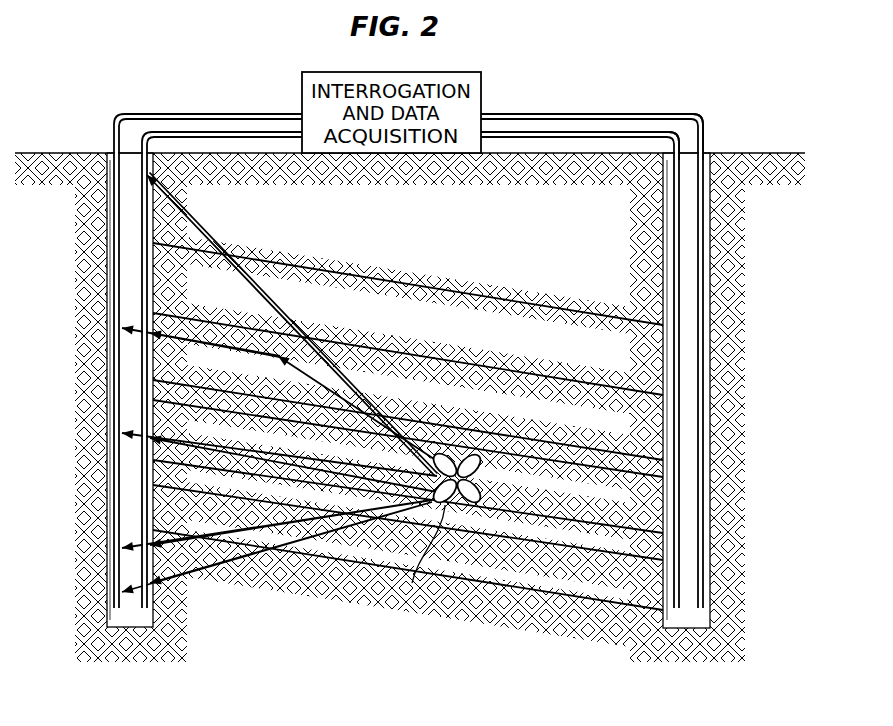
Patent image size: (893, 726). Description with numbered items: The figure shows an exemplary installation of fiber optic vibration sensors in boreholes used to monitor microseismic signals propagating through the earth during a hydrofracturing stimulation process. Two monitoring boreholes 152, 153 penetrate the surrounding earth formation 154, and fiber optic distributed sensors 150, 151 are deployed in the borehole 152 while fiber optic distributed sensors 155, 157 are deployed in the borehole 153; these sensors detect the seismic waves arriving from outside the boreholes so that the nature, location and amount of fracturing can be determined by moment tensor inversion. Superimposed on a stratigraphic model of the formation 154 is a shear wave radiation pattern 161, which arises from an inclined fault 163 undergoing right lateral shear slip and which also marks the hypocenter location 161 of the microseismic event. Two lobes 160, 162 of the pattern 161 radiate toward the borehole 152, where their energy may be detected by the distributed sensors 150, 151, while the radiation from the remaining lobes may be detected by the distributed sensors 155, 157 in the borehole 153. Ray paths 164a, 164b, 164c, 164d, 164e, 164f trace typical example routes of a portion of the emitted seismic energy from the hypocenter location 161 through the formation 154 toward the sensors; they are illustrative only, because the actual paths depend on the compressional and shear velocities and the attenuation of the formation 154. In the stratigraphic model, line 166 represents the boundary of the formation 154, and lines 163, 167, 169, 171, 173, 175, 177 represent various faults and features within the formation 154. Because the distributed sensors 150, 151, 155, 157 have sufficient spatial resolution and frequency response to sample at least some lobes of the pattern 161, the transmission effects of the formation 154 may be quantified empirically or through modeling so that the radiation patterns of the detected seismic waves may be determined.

The fiber optic distributed sensor 150 is at (193, 131).
The fiber optic distributed sensor 151 is at (213, 113).
The borehole 152 is at (95, 262).
The borehole 153 is at (723, 247).
The earth formation 154 is at (640, 300).
The fiber optic distributed sensor 155 is at (583, 131).
The fiber optic distributed sensor 157 is at (607, 113).
The lobe 160 is at (444, 452).
The shear wave radiation pattern 161 is at (483, 487).
The lobe 162 is at (420, 565).
The inclined fault 163 is at (567, 560).
The ray path 164a is at (272, 302).
The ray path 164b is at (342, 398).
The ray path 164c is at (196, 338).
The ray path 164d is at (325, 465).
The ray path 164e is at (292, 530).
The ray path 164f is at (213, 563).
The formation boundary line 166 is at (404, 276).
The fault/feature line 167 is at (435, 358).
The fault/feature line 169 is at (476, 405).
The fault/feature line 171 is at (527, 437).
The fault/feature line 173 is at (607, 477).
The fault/feature line 175 is at (525, 560).
The fault/feature line 177 is at (477, 582).